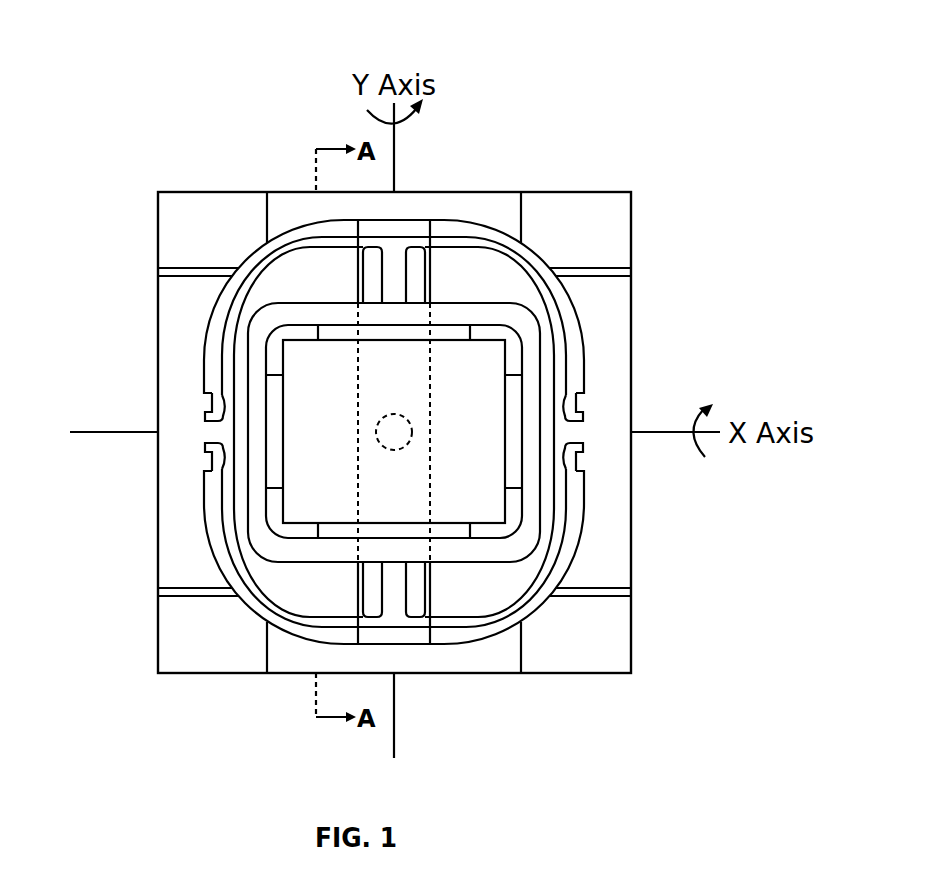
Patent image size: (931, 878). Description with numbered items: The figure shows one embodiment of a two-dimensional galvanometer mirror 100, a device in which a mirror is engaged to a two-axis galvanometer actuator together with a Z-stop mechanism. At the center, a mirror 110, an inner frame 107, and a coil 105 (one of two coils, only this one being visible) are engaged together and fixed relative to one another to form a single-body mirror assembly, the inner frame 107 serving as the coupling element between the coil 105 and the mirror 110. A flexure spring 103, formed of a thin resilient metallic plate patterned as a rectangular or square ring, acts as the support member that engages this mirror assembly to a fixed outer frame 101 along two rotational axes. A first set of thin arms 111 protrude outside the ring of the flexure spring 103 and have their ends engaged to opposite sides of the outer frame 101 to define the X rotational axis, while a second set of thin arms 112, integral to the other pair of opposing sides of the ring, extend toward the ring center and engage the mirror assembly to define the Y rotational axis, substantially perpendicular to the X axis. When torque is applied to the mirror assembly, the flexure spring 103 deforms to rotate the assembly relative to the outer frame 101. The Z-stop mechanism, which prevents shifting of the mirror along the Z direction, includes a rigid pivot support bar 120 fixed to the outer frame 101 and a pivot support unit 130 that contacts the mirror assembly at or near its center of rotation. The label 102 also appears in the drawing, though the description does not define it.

The two-dimensional galvanometer mirror 100 is at (182, 50).
The outer frame 101 is at (187, 215).
The outer ring outer edge 102 is at (207, 343).
The flexure spring 103 is at (507, 263).
The coil 105 is at (263, 533).
The inner frame 107 is at (342, 530).
The mirror 110 is at (467, 503).
The first set of thin arms 111 is at (212, 415).
The second set of thin arms 112 is at (395, 268).
The pivot support bar 120 is at (370, 388).
The pivot support unit 130 is at (414, 426).